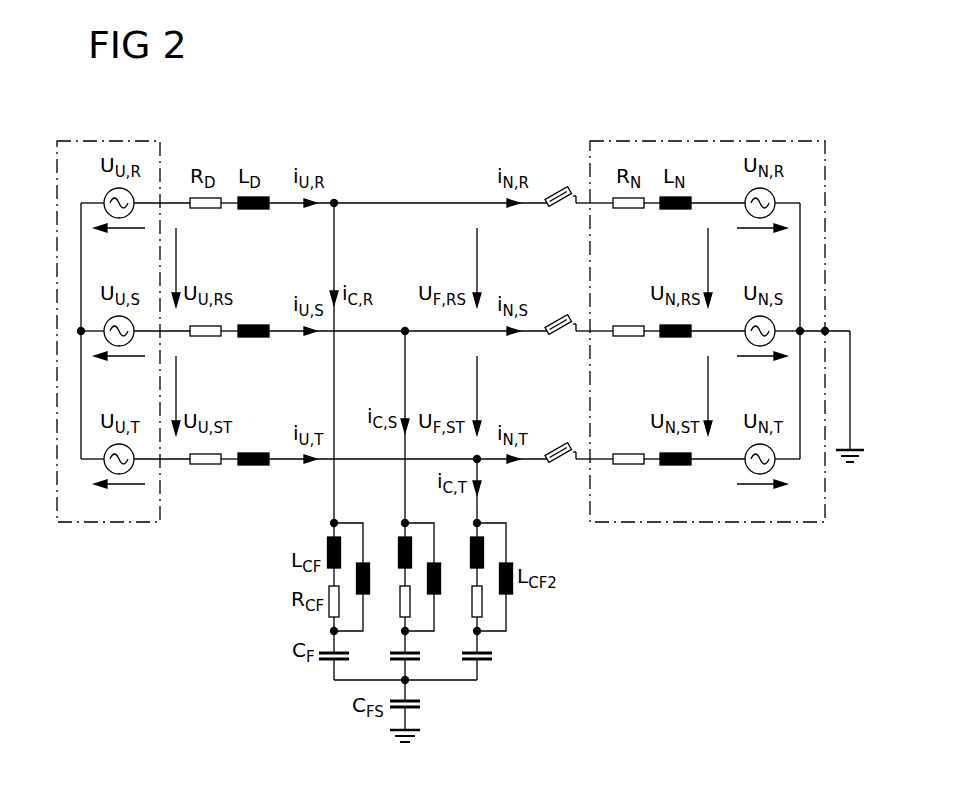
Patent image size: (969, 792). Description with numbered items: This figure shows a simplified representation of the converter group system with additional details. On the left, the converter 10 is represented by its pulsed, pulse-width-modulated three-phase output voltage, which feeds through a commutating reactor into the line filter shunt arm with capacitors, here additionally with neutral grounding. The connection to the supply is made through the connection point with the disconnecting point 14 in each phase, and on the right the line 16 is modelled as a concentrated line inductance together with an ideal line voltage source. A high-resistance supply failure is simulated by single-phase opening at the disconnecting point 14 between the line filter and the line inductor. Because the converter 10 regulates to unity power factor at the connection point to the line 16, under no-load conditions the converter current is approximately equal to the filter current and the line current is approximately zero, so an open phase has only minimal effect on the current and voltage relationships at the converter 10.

The converter 10 is at (108, 141).
The disconnecting point 14 is at (557, 183).
The line 16 is at (706, 141).